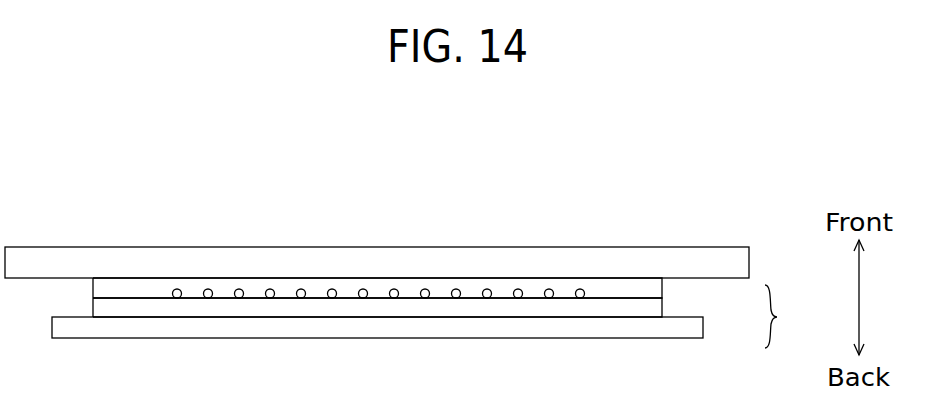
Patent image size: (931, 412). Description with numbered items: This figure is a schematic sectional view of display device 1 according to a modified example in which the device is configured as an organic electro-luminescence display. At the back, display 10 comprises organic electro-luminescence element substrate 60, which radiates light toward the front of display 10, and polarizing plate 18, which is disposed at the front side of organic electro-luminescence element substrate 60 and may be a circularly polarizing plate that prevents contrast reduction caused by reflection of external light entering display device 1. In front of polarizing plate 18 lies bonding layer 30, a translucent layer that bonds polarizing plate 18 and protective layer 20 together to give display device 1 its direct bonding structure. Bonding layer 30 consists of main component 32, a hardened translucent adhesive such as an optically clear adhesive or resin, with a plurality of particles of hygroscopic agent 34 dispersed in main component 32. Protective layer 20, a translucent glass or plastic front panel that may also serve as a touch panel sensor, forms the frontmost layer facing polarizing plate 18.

The display device 1 is at (762, 200).
The display 10 is at (787, 316).
The polarizing plate 18 is at (663, 304).
The protective layer 20 is at (52, 247).
The bonding layer 30 is at (92, 287).
The main component 32 is at (143, 288).
The hygroscopic agent 34 is at (363, 289).
The organic electro-luminescence element substrate 60 is at (703, 323).